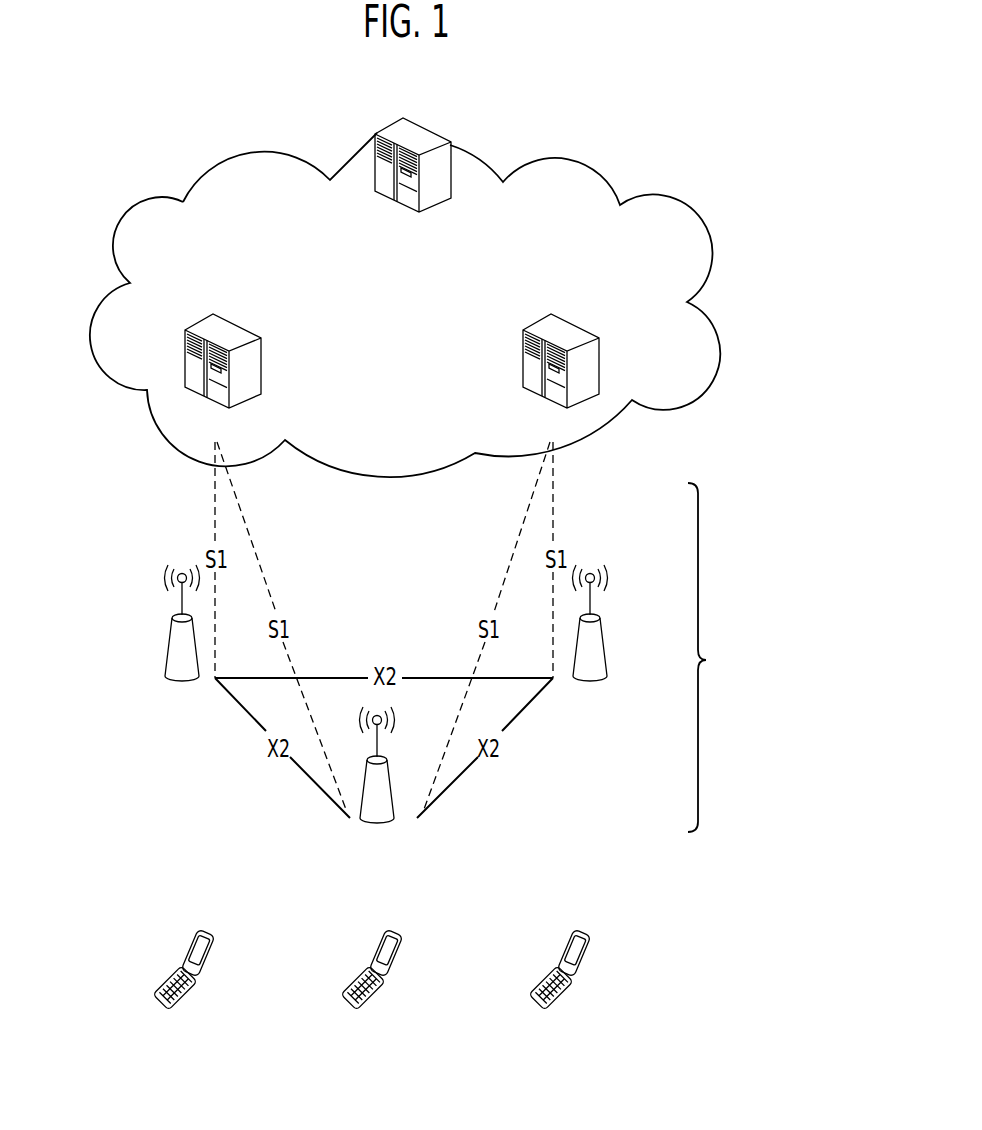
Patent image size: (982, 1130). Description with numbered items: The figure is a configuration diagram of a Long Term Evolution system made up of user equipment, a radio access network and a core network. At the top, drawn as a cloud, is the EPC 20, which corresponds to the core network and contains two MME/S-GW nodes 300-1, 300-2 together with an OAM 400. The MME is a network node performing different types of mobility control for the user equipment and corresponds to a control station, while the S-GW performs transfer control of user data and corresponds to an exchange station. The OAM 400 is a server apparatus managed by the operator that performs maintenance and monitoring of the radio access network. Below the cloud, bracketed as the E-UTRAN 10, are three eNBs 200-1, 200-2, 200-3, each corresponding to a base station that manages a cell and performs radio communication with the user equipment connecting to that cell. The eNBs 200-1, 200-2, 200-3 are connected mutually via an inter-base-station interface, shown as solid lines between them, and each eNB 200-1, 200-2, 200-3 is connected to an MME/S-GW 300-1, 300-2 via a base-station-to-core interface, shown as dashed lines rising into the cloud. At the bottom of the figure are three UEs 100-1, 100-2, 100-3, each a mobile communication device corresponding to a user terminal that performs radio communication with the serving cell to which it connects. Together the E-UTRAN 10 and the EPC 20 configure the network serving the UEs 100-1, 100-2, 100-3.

The E-UTRAN 10 is at (706, 660).
The EPC 20 is at (601, 172).
The UE 100-1 is at (207, 932).
The UE 100-2 is at (398, 955).
The UE 100-3 is at (586, 955).
The eNB 200-1 is at (168, 648).
The eNB 200-2 is at (393, 797).
The eNB 200-3 is at (600, 632).
The MME/S-GW 300-1 is at (244, 323).
The MME/S-GW 300-2 is at (573, 323).
The OAM 400 is at (426, 122).